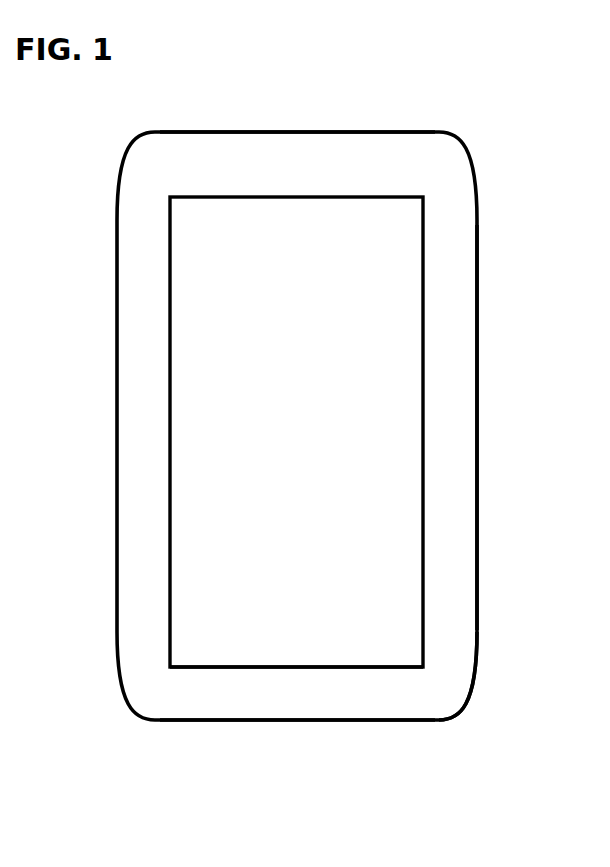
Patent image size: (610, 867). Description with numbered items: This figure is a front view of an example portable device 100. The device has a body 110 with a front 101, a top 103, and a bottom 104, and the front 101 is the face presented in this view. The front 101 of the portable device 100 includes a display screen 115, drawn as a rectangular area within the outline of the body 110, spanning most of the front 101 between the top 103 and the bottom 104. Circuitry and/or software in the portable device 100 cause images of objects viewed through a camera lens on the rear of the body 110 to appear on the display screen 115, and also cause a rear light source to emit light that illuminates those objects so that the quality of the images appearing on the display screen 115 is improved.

The portable device 100 is at (495, 158).
The front 101 is at (441, 699).
The top 103 is at (306, 116).
The bottom 104 is at (291, 736).
The body 110 is at (478, 370).
The display screen 115 is at (318, 431).